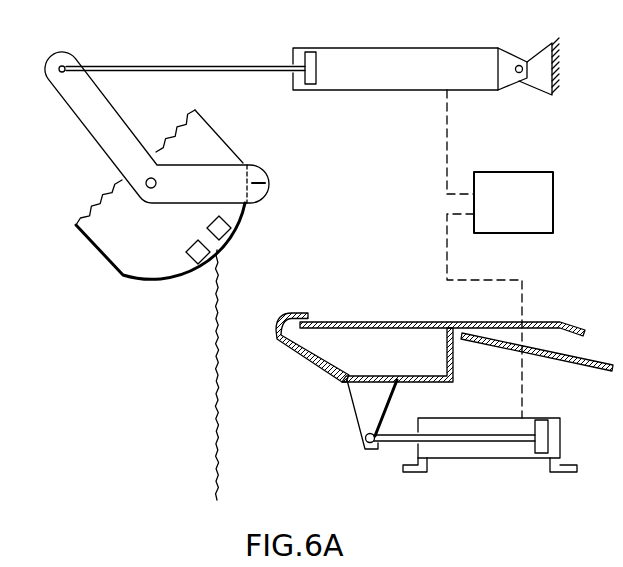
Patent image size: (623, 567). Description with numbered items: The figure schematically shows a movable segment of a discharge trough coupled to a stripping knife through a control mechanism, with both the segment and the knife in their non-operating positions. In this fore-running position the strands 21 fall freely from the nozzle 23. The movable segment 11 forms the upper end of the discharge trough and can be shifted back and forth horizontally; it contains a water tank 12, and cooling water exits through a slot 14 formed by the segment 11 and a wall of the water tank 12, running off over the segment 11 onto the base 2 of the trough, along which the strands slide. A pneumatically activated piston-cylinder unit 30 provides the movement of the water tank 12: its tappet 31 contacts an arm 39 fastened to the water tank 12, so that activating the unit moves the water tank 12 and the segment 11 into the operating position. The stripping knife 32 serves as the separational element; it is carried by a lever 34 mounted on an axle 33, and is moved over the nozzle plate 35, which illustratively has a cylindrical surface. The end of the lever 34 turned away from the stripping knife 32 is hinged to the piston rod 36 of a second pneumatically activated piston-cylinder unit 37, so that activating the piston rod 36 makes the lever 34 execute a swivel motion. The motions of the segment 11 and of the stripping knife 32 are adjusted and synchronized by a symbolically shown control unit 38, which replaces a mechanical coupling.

The base 2 is at (567, 352).
The movable segment 11 is at (421, 322).
The water tank 12 is at (427, 363).
The slot 14 is at (315, 320).
The strands 21 is at (215, 392).
The nozzle 23 is at (223, 247).
The piston-cylinder unit 30 is at (505, 448).
The tappet 31 is at (395, 443).
The stripping knife 32 is at (259, 173).
The axle 33 is at (146, 190).
The lever 34 is at (213, 172).
The nozzle plate 35 is at (231, 236).
The piston rod 36 is at (145, 67).
The piston-cylinder unit 37 is at (345, 58).
The control unit 38 is at (509, 186).
The arm 39 is at (365, 407).